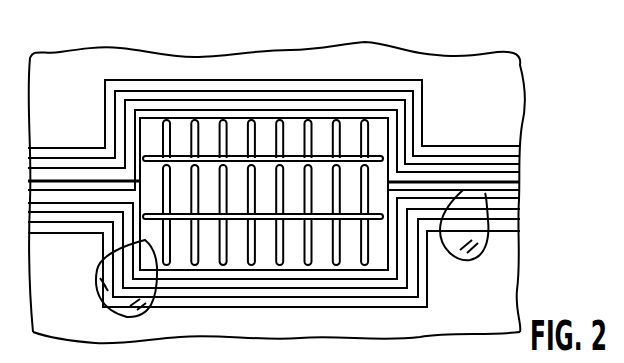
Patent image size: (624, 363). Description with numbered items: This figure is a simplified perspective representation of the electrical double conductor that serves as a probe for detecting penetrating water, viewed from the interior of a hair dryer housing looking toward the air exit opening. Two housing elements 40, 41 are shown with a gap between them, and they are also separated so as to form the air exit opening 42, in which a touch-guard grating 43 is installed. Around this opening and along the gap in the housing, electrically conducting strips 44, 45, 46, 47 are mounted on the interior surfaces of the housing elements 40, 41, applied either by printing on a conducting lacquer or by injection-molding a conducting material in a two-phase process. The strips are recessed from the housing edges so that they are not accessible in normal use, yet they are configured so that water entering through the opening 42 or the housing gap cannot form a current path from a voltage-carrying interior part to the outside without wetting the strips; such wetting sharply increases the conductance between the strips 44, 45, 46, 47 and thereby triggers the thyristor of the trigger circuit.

The housing element 40 is at (384, 62).
The housing element 41 is at (503, 295).
The air exit opening 42 is at (318, 130).
The touch-guard grating 43 is at (249, 153).
The electrically conducting strip 44 is at (510, 208).
The electrically conducting strip 45 is at (508, 227).
The electrically conducting strip 46 is at (442, 173).
The electrically conducting strip 47 is at (493, 153).